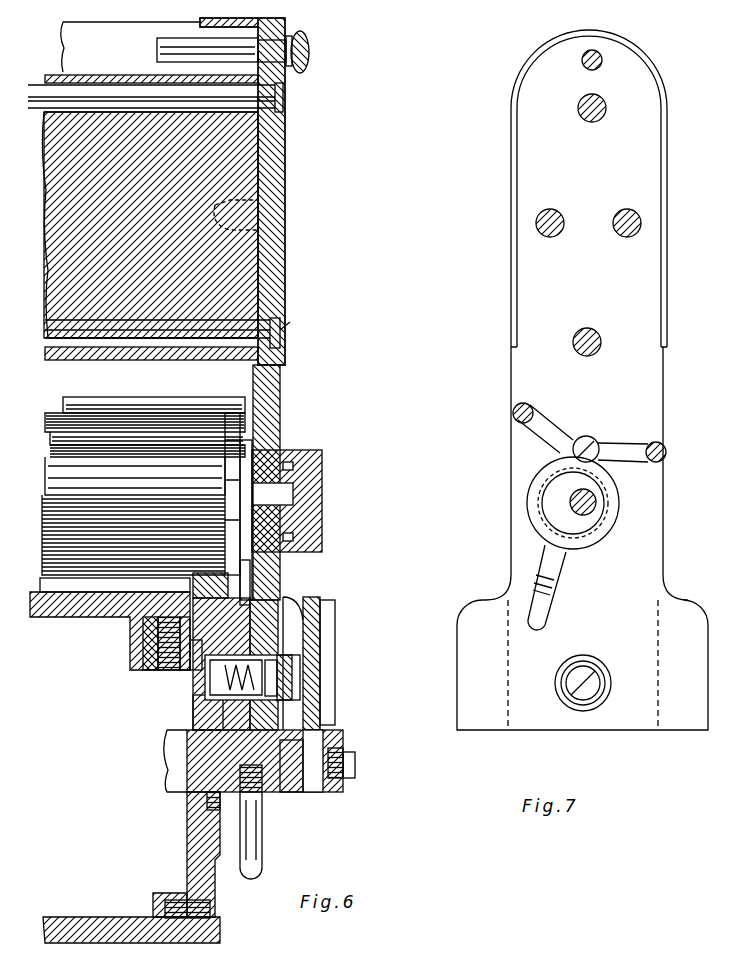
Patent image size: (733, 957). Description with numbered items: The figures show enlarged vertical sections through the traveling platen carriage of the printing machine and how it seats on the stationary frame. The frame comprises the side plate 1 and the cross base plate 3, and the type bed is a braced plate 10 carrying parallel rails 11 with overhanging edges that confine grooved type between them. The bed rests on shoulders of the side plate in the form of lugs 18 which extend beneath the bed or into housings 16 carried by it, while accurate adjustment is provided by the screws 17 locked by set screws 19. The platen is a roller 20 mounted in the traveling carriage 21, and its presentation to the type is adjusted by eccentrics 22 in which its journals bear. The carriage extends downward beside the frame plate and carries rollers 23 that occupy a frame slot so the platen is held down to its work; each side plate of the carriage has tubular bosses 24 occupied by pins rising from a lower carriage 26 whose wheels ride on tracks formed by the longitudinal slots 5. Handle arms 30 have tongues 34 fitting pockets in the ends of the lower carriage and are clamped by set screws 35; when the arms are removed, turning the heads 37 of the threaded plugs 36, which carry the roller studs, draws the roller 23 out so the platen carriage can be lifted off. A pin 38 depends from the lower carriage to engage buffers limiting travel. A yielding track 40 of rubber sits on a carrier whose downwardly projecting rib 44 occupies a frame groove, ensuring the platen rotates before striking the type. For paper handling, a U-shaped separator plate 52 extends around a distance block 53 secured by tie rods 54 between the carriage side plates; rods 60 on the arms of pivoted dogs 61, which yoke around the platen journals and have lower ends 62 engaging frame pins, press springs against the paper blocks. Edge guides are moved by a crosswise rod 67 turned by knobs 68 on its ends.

In FIG. 6, the side plate 1 is at (187, 832).
In FIG. 6, the cross base plate 3 is at (108, 920).
In FIG. 6, the longitudinal slot 5 is at (195, 794).
In FIG. 6, the braced plate 10 is at (108, 610).
In FIG. 6, the parallel rail 11 is at (70, 582).
In FIG. 6, the housing 16 is at (143, 640).
In FIG. 6, the screw 17 is at (182, 672).
In FIG. 6, the lug 18 is at (160, 665).
In FIG. 6, the set screw 19 is at (195, 675).
In FIG. 6, the roller 20 is at (147, 506).
In FIG. 6, the traveling carriage 21 is at (280, 398).
In FIG. 7, the traveling carriage 21 is at (582, 538).
In FIG. 6, the eccentric 22 is at (322, 462).
In FIG. 7, the eccentric 22 is at (573, 503).
In FIG. 6, the roller 23 is at (200, 700).
In FIG. 7, the roller 23 is at (597, 672).
In FIG. 7, the tubular boss 24 is at (560, 665).
In FIG. 6, the lower carriage 26 is at (290, 795).
In FIG. 6, the arm 30 is at (326, 640).
In FIG. 6, the tongue 34 is at (320, 800).
In FIG. 6, the set screw 35 is at (355, 770).
In FIG. 6, the threaded plug 36 is at (268, 660).
In FIG. 6, the head 37 is at (295, 678).
In FIG. 6, the pin 38 is at (262, 850).
In FIG. 6, the yielding track 40 is at (232, 563).
In FIG. 6, the downwardly projecting rib 44 is at (232, 600).
In FIG. 7, the U-shaped plate 52 is at (667, 205).
In FIG. 6, the distance block 53 is at (285, 160).
In FIG. 6, the tie rod 54 is at (283, 100).
In FIG. 6, the rod 60 is at (118, 445).
In FIG. 7, the rod 60 is at (528, 410).
In FIG. 7, the pivoted dog 61 is at (575, 438).
In FIG. 7, the lower end 62 is at (545, 598).
In FIG. 6, the rod 67 is at (157, 50).
In FIG. 6, the knob 68 is at (310, 50).